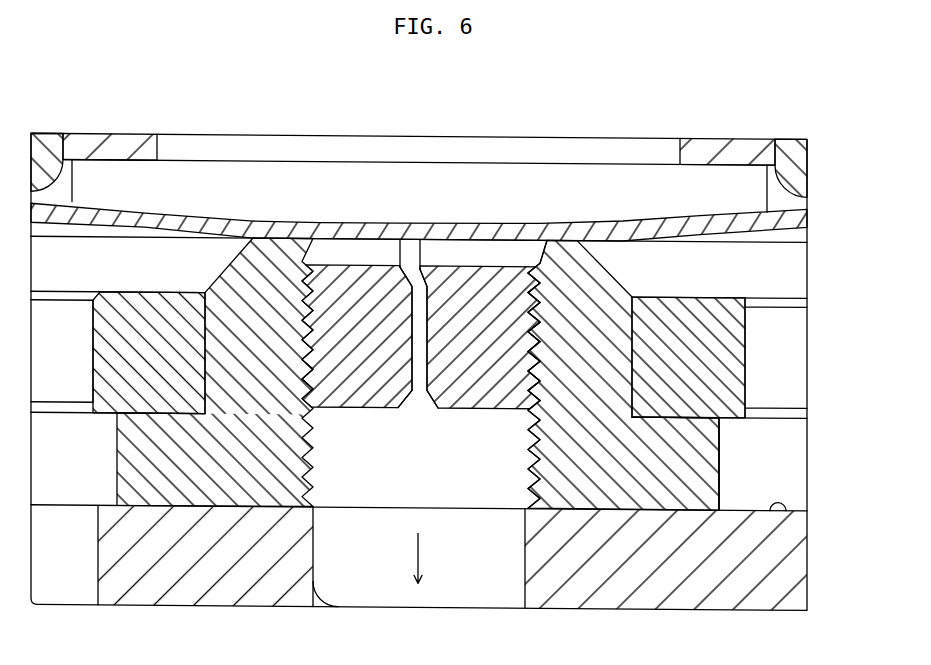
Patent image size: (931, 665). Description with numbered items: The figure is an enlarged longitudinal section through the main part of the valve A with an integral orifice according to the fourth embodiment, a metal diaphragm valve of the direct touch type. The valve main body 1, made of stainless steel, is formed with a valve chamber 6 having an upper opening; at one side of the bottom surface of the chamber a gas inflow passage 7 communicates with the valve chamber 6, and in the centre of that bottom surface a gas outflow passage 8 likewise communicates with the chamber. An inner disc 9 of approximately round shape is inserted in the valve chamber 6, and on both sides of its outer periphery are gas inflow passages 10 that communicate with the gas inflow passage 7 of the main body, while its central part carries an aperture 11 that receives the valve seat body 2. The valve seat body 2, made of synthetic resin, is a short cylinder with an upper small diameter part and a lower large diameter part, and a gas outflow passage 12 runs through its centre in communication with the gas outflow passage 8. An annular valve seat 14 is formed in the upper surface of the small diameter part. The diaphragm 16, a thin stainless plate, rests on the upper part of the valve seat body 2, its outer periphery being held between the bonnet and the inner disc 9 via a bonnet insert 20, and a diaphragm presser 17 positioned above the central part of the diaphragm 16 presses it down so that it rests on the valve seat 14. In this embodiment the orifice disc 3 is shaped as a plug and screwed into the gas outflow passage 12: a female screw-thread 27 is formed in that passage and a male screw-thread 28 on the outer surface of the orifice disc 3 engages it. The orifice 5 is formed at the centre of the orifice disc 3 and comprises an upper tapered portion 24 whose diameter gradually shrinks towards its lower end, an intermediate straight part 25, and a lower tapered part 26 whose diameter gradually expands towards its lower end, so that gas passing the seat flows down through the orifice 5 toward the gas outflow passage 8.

The valve main body 1 is at (631, 587).
The valve seat body 2 is at (699, 485).
The orifice disc 3 is at (479, 275).
The orifice 5 is at (423, 407).
The valve chamber 6 is at (789, 512).
The gas inflow passage 7 is at (100, 588).
The gas outflow passage 8 is at (333, 603).
The inner disc 9 is at (170, 385).
The gas inflow passages 10 is at (82, 388).
The aperture 11 is at (212, 378).
The gas outflow passage 12 is at (303, 220).
The annular valve seat 14 is at (575, 252).
The diaphragm 16 is at (698, 227).
The diaphragm presser 17 is at (220, 183).
The bonnet insert 20 is at (789, 146).
The upper tapered portion 24 is at (400, 232).
The intermediate straight part 25 is at (420, 305).
The lower tapered part 26 is at (399, 408).
The female screw-thread 27 is at (533, 480).
The male screw-thread 28 is at (541, 300).
The valve with an integral orifice A is at (844, 190).